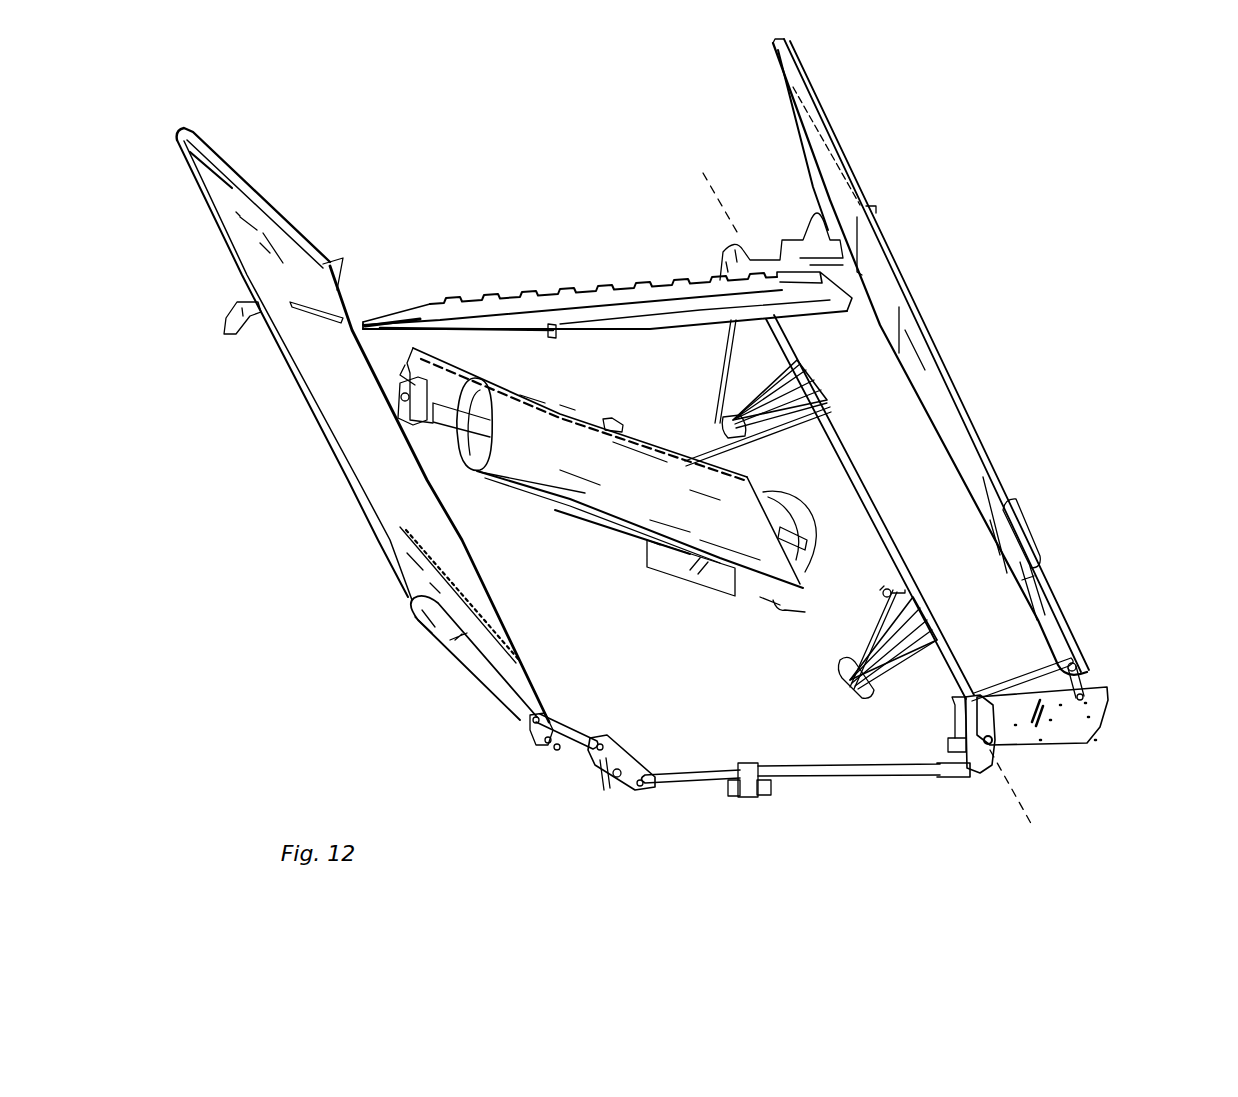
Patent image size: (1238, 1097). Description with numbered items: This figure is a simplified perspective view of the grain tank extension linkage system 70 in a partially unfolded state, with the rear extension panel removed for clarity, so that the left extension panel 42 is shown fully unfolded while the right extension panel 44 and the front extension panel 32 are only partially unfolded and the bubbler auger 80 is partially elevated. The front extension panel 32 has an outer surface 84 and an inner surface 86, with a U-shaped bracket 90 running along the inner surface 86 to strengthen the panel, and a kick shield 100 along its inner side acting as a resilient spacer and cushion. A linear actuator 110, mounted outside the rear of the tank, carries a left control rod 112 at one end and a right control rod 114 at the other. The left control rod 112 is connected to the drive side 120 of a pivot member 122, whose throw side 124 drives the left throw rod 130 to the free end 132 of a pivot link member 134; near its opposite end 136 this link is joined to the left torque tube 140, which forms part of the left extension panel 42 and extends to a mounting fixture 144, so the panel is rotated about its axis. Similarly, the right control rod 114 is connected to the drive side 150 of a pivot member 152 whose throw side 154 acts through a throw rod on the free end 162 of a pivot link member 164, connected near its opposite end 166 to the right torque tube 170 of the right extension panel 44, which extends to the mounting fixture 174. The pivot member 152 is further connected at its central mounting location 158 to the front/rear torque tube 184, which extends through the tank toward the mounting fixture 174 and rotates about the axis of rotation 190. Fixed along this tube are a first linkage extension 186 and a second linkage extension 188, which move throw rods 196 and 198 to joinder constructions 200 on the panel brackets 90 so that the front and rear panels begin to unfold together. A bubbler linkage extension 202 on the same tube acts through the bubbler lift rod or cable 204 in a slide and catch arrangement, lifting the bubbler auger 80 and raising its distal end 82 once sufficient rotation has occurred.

The front extension panel 32 is at (540, 318).
The left extension panel 42 is at (340, 404).
The right extension panel 44 is at (926, 356).
The linkage system 70 is at (738, 810).
The bubbler auger 80 is at (568, 488).
The distal end 82 is at (432, 428).
The outer surface 84 is at (610, 310).
The inner surface 86 is at (608, 334).
The U-shaped bracket 90 is at (540, 335).
The kick shield 100 is at (456, 307).
The linear actuator 110 is at (752, 796).
The left control rod 112 is at (678, 770).
The right control rod 114 is at (860, 790).
The drive side 120 is at (640, 795).
The pivot member 122 is at (603, 792).
The throw side 124 is at (605, 742).
The left throw rod 130 is at (570, 728).
The free end 132 is at (540, 743).
The pivot link member 134 is at (548, 752).
The opposite end 136 is at (560, 752).
The left torque tube 140 is at (552, 745).
The mounting bushing and fixture 144 is at (262, 322).
The drive side 150 is at (975, 715).
The pivot member 152 is at (1000, 740).
The throw side 154 is at (962, 720).
The central mounting location 158 is at (958, 733).
The free end 162 is at (1080, 664).
The pivot link member 164 is at (1085, 670).
The opposite end 166 is at (1090, 732).
The right torque tube 170 is at (1087, 699).
The mounting fixture 174 is at (815, 226).
The front/rear torque tube 184 is at (837, 433).
The first linkage extension 186 is at (777, 374).
The second linkage extension 188 is at (848, 660).
The axis of rotation 190 is at (718, 196).
The throw rod 196 is at (725, 357).
The throw rod 198 is at (875, 632).
The joinder construction 200 is at (895, 590).
The bubbler linkage extension 202 is at (795, 432).
The bubbler lift rod or cable 204 is at (713, 448).